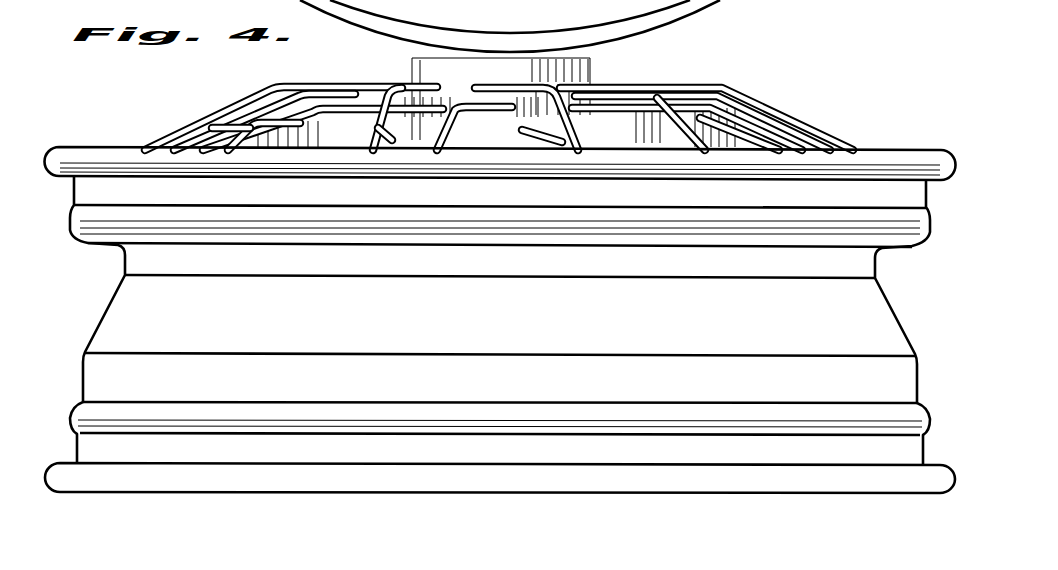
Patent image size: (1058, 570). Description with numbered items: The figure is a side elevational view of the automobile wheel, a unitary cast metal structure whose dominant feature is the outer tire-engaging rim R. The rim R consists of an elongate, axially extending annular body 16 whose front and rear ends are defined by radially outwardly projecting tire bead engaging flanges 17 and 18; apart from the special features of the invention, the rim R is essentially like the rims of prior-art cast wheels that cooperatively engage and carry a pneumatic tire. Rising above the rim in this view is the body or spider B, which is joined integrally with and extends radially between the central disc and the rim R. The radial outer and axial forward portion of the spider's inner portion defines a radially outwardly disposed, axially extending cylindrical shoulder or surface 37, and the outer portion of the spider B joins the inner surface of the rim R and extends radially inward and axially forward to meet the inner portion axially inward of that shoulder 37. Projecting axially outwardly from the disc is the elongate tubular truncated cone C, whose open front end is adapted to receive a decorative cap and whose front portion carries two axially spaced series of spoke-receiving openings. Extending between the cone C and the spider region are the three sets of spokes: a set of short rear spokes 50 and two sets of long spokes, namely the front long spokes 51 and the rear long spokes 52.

The rim R is at (500, 295).
The annular body 16 is at (863, 298).
The tire bead engaging flange 17 is at (920, 148).
The tire bead engaging flange 18 is at (500, 474).
The cylindrical shoulder 37 is at (513, 134).
The short rear spokes 50 is at (797, 123).
The front long spokes 51 is at (727, 90).
The rear long spokes 52 is at (749, 89).
The body or spider B is at (419, 131).
The truncated cone C is at (602, 61).